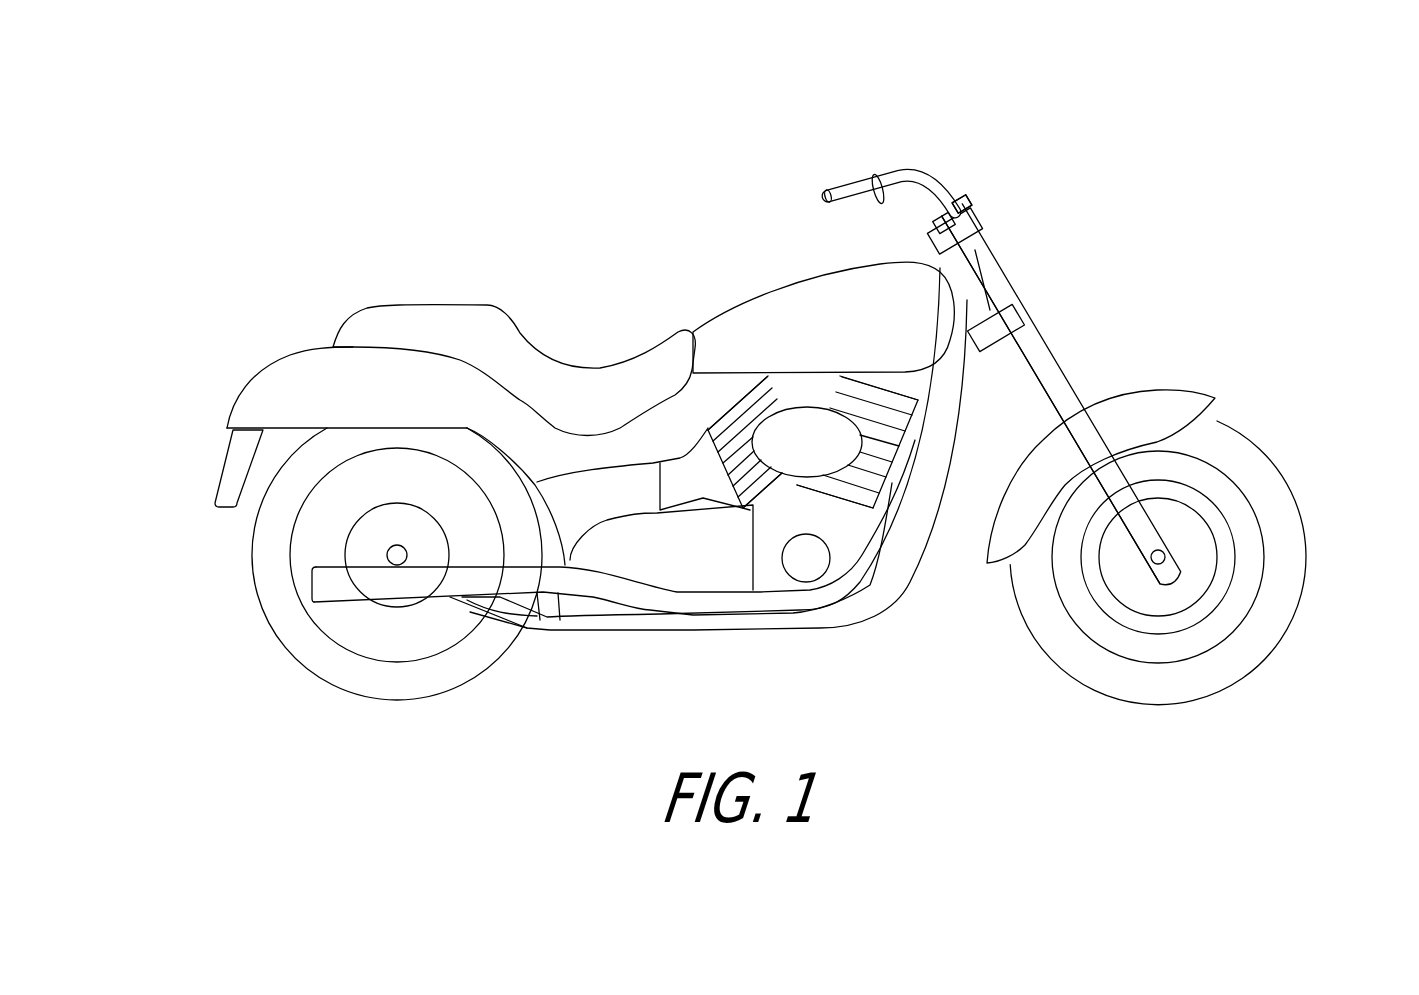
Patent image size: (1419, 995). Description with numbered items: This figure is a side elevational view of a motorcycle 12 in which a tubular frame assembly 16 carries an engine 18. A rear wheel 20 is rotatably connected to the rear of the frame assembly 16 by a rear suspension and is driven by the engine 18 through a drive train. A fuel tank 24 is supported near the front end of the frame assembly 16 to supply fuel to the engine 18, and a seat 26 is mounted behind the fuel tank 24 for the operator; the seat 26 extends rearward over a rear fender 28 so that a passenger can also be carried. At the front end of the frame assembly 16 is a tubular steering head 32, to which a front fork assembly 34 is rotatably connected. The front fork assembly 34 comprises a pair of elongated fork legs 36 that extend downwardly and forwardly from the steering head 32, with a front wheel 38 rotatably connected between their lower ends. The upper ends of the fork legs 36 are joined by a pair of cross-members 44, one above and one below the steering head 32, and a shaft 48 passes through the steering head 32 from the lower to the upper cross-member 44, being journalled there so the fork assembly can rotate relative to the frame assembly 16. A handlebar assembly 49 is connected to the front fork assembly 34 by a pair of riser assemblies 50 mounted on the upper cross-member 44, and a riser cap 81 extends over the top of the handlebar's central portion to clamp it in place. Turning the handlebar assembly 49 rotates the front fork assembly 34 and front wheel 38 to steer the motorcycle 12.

The motorcycle 12 is at (602, 204).
The tubular frame assembly 16 is at (885, 580).
The engine 18 is at (770, 552).
The rear wheel 20 is at (263, 543).
The fuel tank 24 is at (783, 322).
The seat 26 is at (618, 383).
The rear fender 28 is at (317, 383).
The tubular steering head 32 is at (972, 297).
The front fork assembly 34 is at (1066, 326).
The fork legs 36 is at (1062, 385).
The front wheel 38 is at (1280, 522).
The cross-members 44 is at (977, 243).
The shaft 48 is at (938, 247).
The handlebar assembly 49 is at (890, 166).
The riser assemblies 50 is at (975, 192).
The riser cap 81 is at (953, 198).